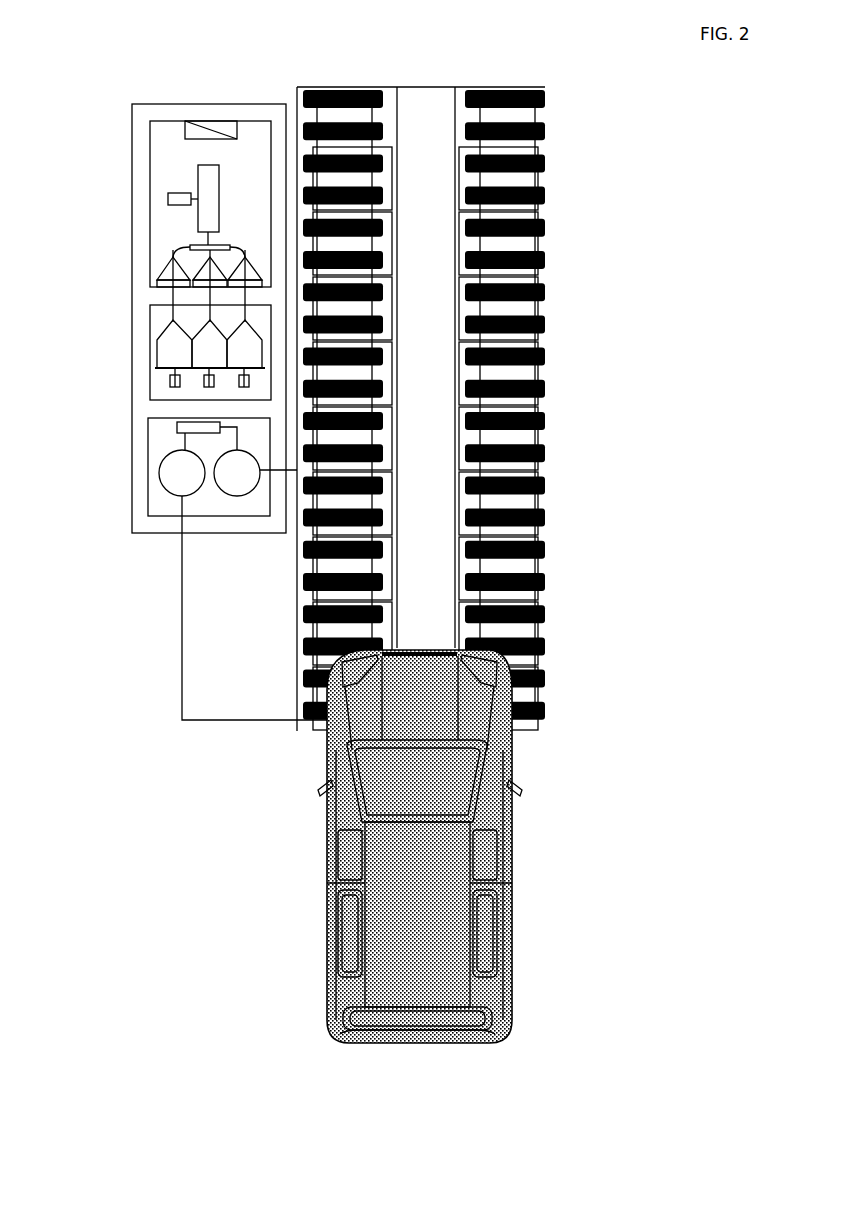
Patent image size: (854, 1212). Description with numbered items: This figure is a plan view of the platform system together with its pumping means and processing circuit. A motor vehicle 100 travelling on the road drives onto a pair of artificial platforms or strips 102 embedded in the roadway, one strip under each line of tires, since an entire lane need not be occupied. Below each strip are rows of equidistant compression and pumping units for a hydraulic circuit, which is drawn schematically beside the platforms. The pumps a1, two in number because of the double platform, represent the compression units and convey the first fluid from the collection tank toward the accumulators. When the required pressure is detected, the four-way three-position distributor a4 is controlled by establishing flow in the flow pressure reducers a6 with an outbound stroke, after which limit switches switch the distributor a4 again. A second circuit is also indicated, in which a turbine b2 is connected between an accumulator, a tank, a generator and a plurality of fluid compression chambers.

The turbine b2 is at (205, 183).
The flow pressure reducers a6 is at (150, 283).
The distributor 4/3 a4 is at (205, 427).
The pumps a1 is at (182, 473).
The artificial platforms or strips 102 is at (548, 548).
The motor vehicle 100 is at (327, 870).